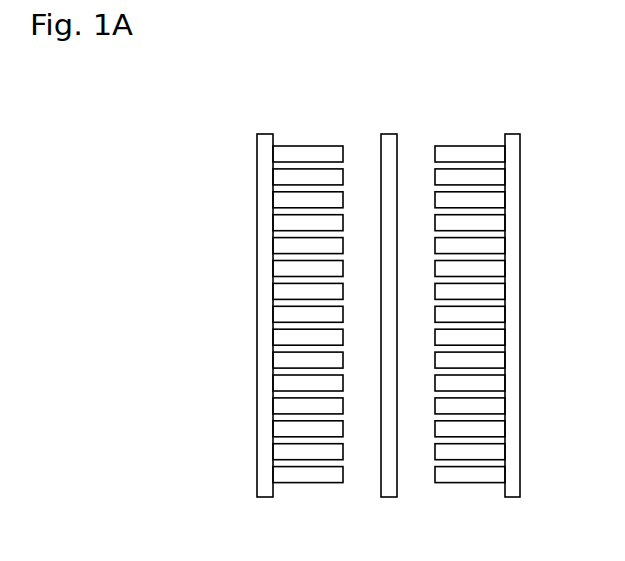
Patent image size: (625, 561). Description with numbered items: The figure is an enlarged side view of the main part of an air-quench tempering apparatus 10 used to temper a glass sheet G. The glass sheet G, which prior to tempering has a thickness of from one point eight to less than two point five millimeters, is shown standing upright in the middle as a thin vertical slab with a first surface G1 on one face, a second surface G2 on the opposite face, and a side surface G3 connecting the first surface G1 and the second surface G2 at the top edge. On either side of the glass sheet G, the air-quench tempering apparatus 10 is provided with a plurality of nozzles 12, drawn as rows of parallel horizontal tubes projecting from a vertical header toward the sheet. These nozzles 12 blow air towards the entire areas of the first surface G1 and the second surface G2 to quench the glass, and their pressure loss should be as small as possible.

The air-quench tempering apparatus 10 is at (386, 294).
The nozzles 12 is at (284, 243).
The glass sheet G is at (388, 278).
The first surface G1 is at (381, 149).
The second surface G2 is at (397, 149).
The side surface G3 is at (388, 134).